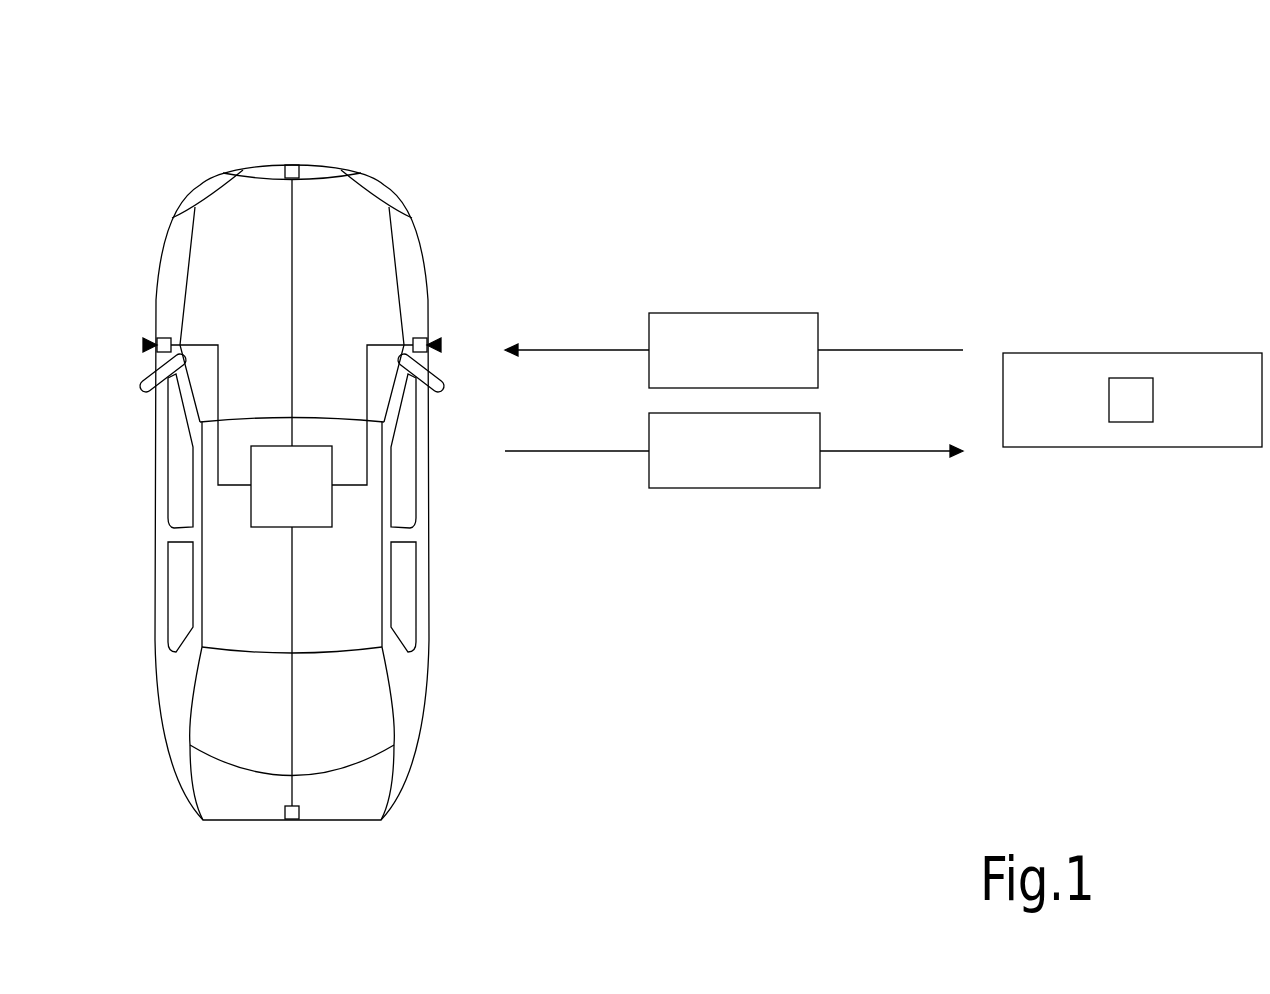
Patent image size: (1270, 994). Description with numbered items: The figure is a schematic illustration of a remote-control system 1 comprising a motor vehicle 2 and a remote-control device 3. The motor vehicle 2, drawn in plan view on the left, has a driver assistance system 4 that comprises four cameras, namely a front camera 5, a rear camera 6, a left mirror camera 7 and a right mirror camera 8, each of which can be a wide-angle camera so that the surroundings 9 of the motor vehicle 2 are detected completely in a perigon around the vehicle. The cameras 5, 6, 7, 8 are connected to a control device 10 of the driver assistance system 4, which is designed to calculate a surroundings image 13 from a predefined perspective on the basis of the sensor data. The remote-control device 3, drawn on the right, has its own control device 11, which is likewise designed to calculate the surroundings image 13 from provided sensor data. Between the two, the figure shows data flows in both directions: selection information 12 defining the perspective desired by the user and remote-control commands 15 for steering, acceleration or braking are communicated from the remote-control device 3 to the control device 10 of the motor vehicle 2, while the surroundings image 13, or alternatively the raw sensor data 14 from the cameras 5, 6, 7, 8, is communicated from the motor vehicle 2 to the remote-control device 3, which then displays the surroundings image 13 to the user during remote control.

The remote-control system 1 is at (825, 138).
The motor vehicle 2 is at (292, 496).
The remote-control device 3 is at (1132, 396).
The driver assistance system 4 is at (368, 297).
The front camera 5 is at (292, 165).
The rear camera 6 is at (292, 820).
The left mirror camera 7 is at (158, 338).
The right mirror camera 8 is at (427, 338).
The surroundings 9 is at (461, 101).
The control device 10 is at (332, 500).
The control device 11 is at (1131, 422).
The selection information 12 is at (734, 350).
The surroundings image 13 is at (734, 450).
The raw sensor data 14 is at (776, 466).
The remote-control commands 15 is at (775, 366).